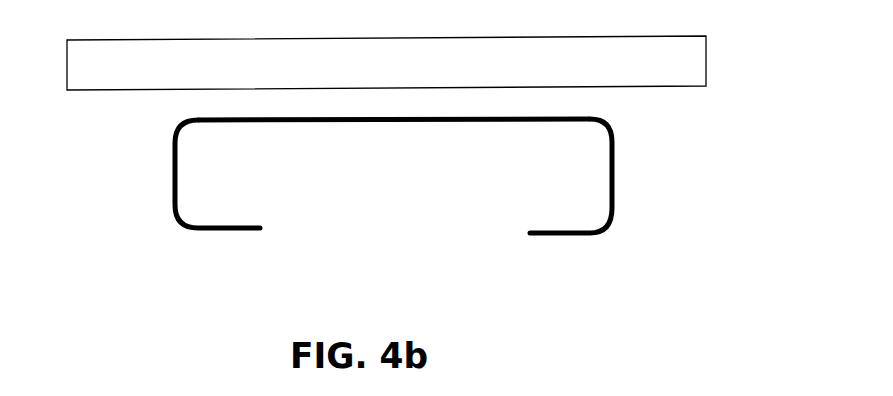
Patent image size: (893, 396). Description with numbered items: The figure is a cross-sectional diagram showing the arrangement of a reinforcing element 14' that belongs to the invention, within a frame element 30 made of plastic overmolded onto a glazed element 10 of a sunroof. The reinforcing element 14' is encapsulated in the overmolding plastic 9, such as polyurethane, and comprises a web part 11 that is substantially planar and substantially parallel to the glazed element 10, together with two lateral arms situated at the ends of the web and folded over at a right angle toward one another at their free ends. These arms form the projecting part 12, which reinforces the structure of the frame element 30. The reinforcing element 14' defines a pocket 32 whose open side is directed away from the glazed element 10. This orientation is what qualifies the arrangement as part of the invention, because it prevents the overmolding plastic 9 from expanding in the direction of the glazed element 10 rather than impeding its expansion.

The glazed element 10 is at (399, 74).
The web part 11 is at (378, 121).
The projecting part 12 is at (175, 197).
The overmolding plastic 9 is at (453, 178).
The pocket 32 is at (445, 200).
The frame element 30 is at (726, 188).
The reinforcing element 14' is at (416, 201).